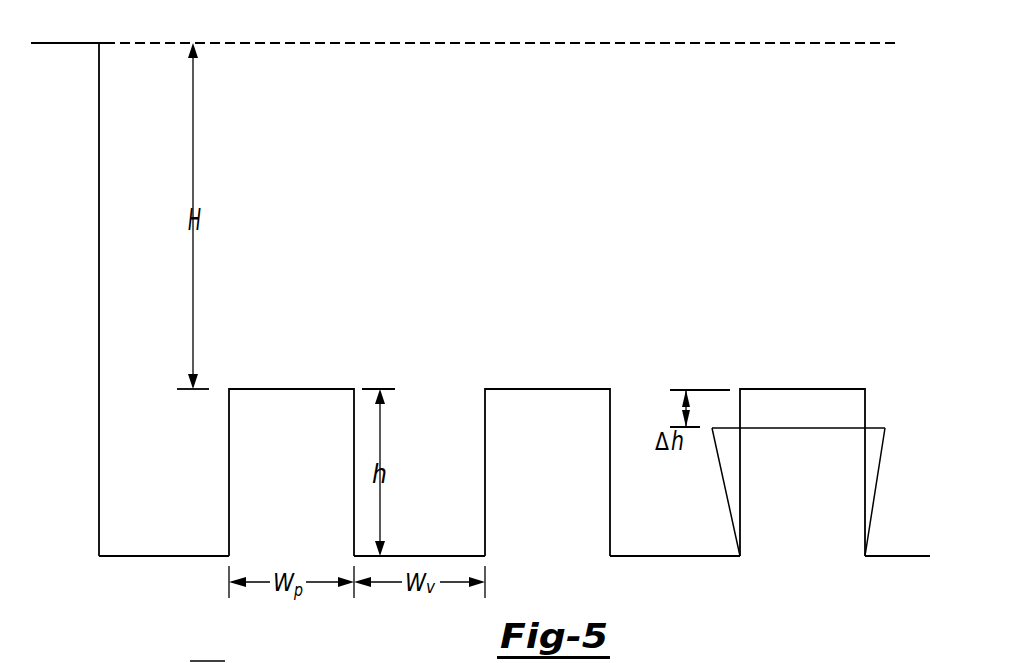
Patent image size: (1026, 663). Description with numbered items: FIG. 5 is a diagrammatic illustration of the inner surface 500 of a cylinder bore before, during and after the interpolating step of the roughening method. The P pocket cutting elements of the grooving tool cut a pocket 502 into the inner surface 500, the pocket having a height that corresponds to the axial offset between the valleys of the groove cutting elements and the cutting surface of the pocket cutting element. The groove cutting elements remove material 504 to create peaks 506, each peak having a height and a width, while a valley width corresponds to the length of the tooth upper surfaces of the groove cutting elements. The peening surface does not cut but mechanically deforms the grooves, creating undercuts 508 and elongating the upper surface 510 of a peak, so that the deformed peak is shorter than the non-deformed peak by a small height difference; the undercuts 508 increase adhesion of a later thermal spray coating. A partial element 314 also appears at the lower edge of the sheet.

The inner surface 500 is at (90, 43).
The pocket 502 is at (79, 48).
The material 504 is at (178, 489).
The peaks 506 is at (304, 489).
The undercuts 508 is at (730, 510).
The upper surface 510 is at (878, 428).
The partial element (adjacent figure) 314 is at (180, 654).